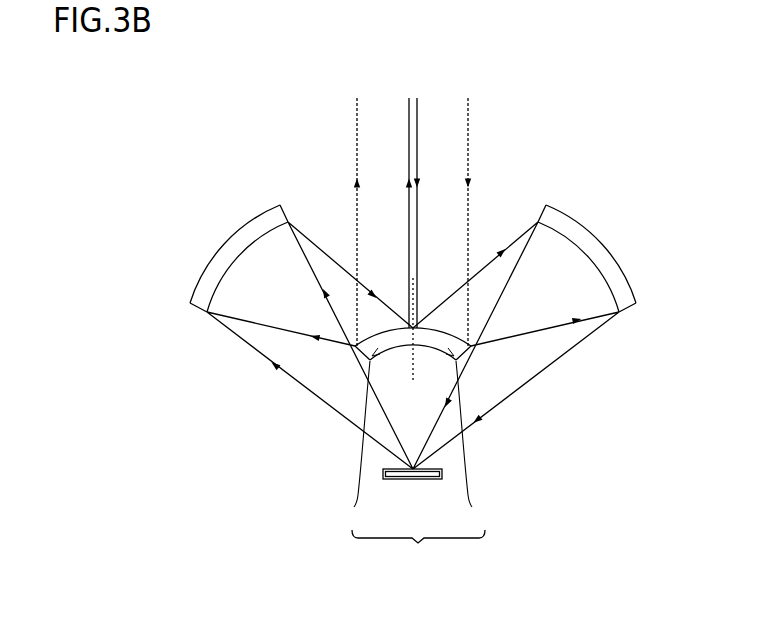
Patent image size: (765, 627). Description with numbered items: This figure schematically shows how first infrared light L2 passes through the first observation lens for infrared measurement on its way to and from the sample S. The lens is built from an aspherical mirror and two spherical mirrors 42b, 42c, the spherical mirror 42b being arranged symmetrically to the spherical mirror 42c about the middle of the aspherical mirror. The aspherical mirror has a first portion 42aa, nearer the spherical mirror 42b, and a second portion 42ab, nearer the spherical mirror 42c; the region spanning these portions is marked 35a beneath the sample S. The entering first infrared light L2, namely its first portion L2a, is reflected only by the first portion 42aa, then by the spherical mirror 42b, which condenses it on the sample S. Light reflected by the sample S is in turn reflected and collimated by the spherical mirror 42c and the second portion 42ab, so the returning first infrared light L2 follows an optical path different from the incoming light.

The spherical mirror 42c is at (223, 260).
The spherical mirror 42b is at (600, 265).
The second portion 42ab is at (352, 445).
The first portion 42aa is at (483, 445).
The light emitting region 35a is at (418, 549).
The sample S is at (398, 479).
The first infrared light L2 is at (416, 213).
The first portion L2a is at (415, 222).